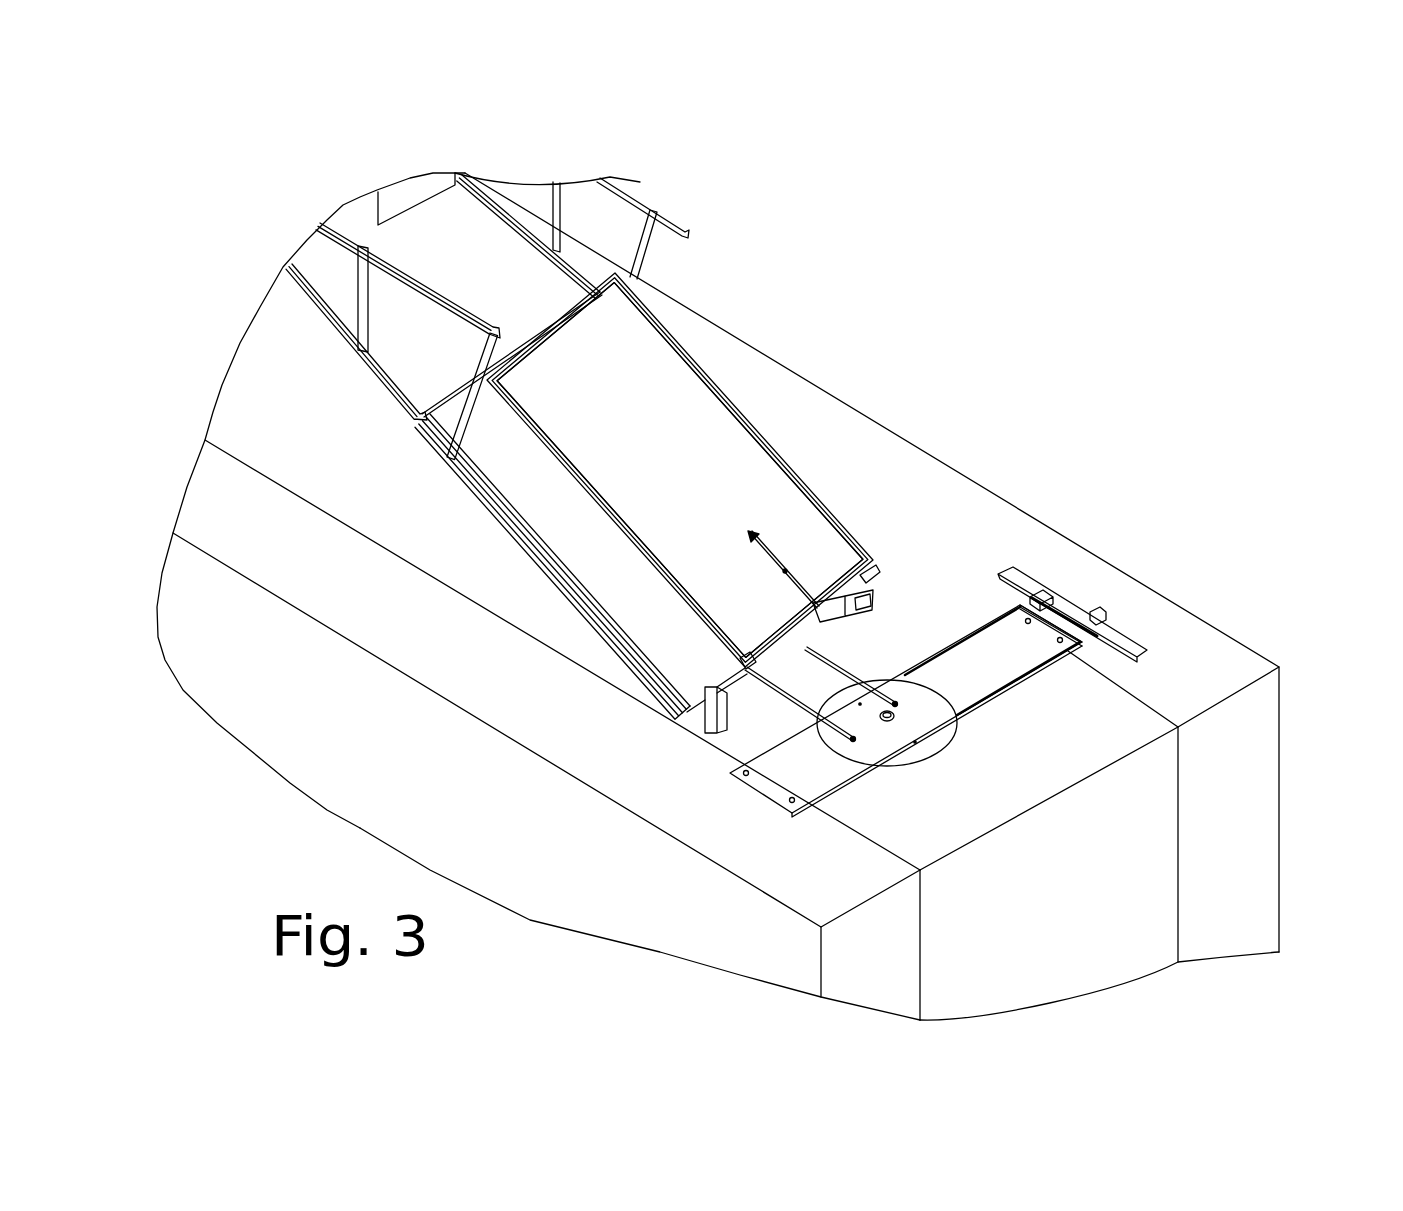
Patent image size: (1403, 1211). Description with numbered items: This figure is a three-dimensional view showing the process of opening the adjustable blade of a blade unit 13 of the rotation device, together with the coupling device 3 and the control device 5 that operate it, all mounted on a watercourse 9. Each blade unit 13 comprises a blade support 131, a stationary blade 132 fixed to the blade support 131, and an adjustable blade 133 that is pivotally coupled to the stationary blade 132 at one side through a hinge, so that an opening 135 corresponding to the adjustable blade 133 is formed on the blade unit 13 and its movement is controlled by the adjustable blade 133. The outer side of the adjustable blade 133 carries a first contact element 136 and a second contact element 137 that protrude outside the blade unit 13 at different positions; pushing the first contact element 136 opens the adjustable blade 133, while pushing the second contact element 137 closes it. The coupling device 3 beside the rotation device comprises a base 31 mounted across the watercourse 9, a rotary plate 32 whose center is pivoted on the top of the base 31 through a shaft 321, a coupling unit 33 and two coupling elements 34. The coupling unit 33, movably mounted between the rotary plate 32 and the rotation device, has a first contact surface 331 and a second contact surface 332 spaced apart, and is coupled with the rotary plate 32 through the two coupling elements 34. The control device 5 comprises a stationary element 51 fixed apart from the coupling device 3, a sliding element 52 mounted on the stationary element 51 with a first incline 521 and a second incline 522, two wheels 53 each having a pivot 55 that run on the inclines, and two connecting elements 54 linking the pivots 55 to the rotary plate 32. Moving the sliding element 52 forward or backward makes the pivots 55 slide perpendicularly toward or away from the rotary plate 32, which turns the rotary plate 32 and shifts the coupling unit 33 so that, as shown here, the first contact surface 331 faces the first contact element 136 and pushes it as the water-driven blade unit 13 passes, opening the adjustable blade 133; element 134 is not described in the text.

The watercourse 9 is at (1293, 692).
The blade unit 13 is at (760, 410).
The adjustable blade 133 is at (655, 355).
The blade support 131 is at (475, 488).
The stationary blade 132 is at (605, 603).
The third support bar 134 is at (552, 569).
The opening 135 is at (862, 582).
The first contact element 136 is at (818, 603).
The second contact element 137 is at (740, 660).
The coupling device 3 is at (877, 725).
The base 31 is at (777, 785).
The rotary plate 32 is at (947, 741).
The shaft 321 is at (889, 722).
The coupling unit 33 is at (848, 650).
The first contact surface 331 is at (838, 607).
The second contact surface 332 is at (727, 700).
The coupling element 34 is at (851, 662).
The control device 5 is at (1077, 585).
The stationary element 51 is at (1085, 657).
The sliding element 52 is at (1127, 640).
The first incline 521 is at (1050, 592).
The second incline 522 is at (1095, 616).
The wheel 53 is at (1050, 593).
The connecting element 54 is at (968, 640).
The pivot 55 is at (997, 605).